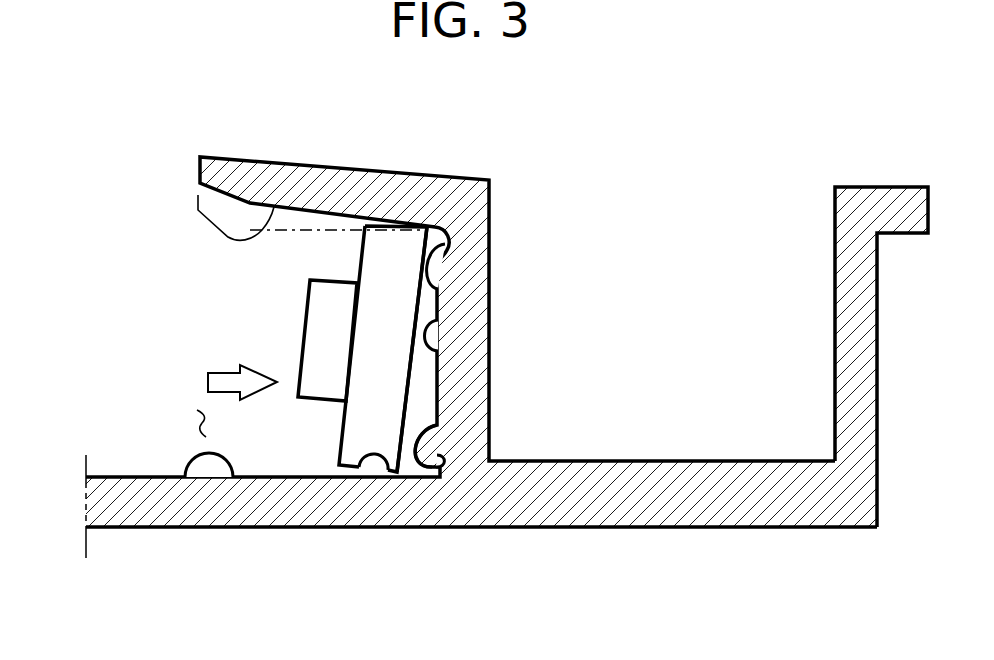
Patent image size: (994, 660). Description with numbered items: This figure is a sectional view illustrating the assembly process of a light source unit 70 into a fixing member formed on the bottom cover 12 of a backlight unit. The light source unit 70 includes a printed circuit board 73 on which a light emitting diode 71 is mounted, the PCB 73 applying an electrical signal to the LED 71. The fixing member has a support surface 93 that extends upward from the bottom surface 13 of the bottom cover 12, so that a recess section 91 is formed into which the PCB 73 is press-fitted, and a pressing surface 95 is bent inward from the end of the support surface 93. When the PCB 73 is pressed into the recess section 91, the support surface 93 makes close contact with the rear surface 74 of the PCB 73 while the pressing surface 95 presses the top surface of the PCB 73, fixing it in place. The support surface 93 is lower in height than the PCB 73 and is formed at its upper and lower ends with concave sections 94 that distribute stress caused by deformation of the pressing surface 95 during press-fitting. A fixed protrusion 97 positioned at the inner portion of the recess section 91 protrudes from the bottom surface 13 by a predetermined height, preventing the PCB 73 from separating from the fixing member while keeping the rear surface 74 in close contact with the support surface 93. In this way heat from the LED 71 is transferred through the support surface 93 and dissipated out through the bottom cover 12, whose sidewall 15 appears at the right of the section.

The bottom cover 12 is at (470, 498).
The bottom surface 13 is at (187, 477).
The sidewall 15 is at (835, 278).
The light source unit 70 is at (284, 348).
The light emitting diode 71 is at (308, 317).
The printed circuit board 73 is at (352, 442).
The rear surface 74 is at (408, 381).
The recess section 91 is at (190, 422).
The support surface 93 is at (440, 318).
The concave section 94 is at (447, 291).
The pressing surface 95 is at (250, 231).
The fixed protrusion 97 is at (387, 470).